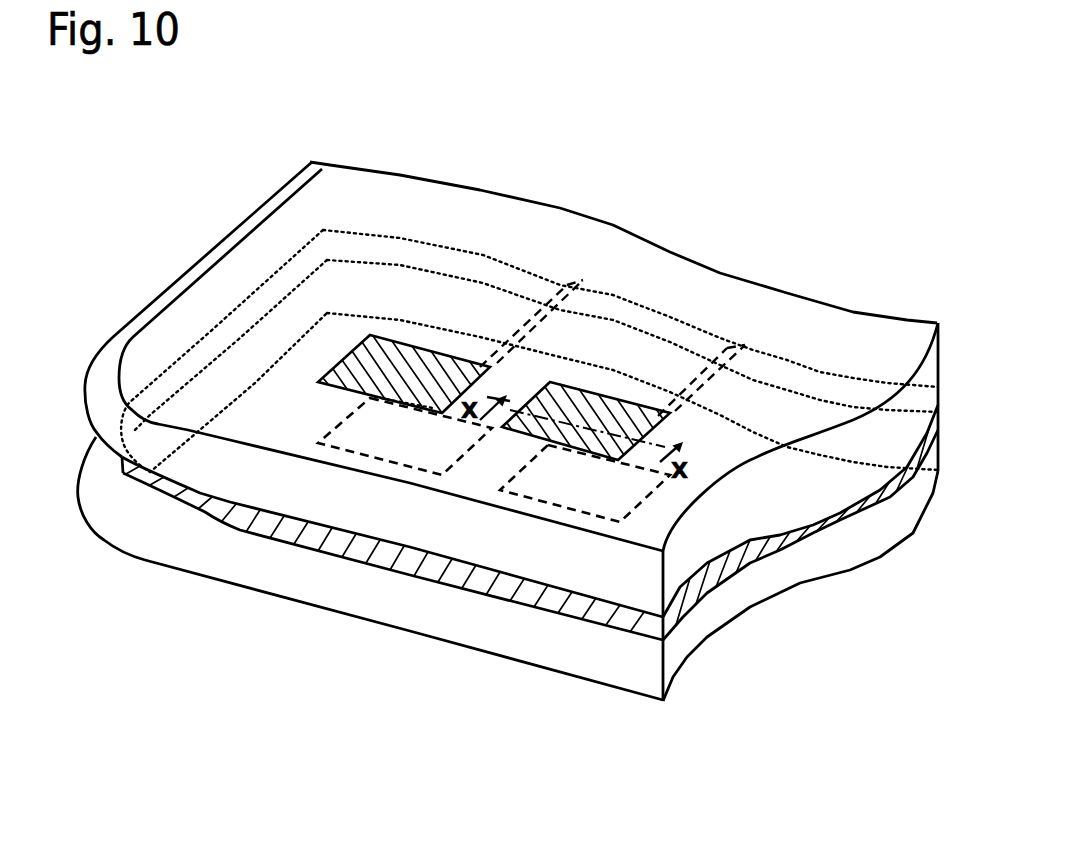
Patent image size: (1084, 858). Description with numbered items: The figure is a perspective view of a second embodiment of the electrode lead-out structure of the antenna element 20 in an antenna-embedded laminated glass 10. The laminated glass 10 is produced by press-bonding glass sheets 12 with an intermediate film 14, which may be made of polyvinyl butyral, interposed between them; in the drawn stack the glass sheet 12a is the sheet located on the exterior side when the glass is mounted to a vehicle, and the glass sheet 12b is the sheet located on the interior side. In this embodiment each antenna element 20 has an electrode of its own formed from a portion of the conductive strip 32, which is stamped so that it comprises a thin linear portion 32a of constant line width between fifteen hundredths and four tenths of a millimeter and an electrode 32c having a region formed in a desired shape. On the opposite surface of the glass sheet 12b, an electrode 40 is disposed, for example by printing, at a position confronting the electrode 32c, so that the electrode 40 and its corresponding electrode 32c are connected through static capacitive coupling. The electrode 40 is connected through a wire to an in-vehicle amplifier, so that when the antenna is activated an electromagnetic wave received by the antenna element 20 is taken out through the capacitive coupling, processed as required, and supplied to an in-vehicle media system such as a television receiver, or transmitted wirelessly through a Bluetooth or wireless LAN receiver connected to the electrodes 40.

The laminated glass 10 is at (180, 143).
The glass sheet 12 is at (385, 665).
The glass sheet 12a is at (488, 637).
The glass sheet 12b is at (478, 547).
The intermediate film 14 is at (262, 527).
The antenna element 20 is at (690, 350).
The conductive strip 32 is at (527, 298).
The thin linear portion 32a is at (515, 345).
The electrode 32c is at (347, 417).
The electrode 40 is at (370, 336).